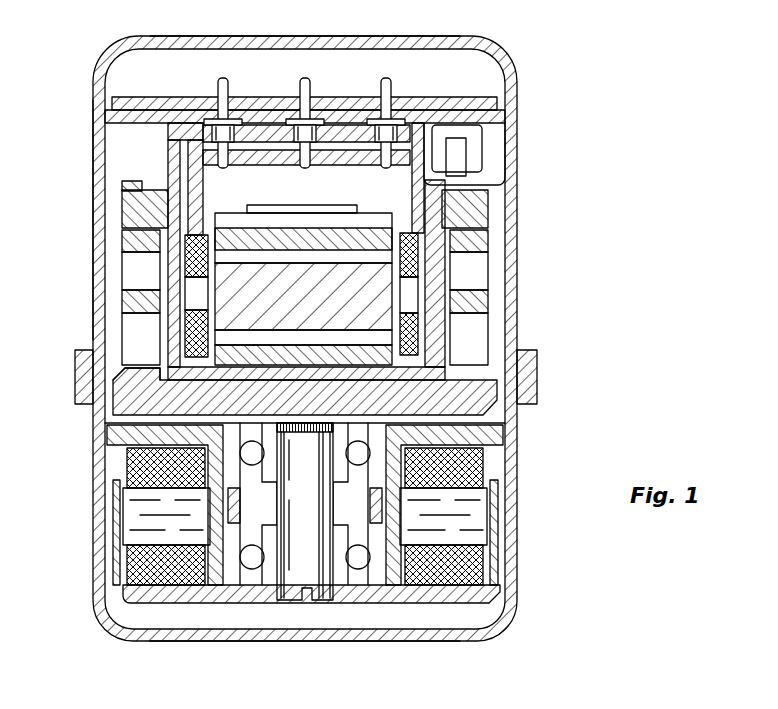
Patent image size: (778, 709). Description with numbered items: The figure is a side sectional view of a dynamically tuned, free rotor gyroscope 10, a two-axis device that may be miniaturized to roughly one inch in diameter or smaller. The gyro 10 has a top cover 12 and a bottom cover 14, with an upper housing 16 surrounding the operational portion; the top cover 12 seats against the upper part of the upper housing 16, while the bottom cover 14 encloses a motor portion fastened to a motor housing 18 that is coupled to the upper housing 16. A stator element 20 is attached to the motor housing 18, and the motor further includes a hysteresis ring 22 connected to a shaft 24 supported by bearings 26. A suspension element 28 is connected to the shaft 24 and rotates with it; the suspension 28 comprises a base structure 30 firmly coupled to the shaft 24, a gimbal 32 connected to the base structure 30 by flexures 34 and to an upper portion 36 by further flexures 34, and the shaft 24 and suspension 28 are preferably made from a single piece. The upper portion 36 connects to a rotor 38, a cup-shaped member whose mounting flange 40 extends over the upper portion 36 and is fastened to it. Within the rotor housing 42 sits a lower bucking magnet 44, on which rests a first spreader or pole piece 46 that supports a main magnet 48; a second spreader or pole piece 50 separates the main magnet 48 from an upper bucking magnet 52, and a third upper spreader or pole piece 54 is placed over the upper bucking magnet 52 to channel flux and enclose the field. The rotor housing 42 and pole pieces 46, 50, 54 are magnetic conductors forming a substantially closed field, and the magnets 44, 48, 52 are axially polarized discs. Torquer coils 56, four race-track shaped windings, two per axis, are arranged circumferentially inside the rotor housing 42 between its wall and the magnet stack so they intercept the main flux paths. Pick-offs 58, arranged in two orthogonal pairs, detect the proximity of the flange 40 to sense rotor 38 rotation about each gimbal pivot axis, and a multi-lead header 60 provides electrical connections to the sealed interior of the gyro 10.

The gyroscope 10 is at (519, 50).
The top cover 12 is at (252, 12).
The bottom cover 14 is at (440, 642).
The upper housing 16 is at (93, 193).
The motor housing 18 is at (503, 443).
The stator element 20 is at (138, 510).
The hysteresis ring 22 is at (495, 557).
The shaft 24 is at (290, 598).
The bearings 26 is at (245, 560).
The suspension element 28 is at (536, 360).
The base structure 30 is at (505, 365).
The gimbal 32 is at (487, 252).
The flexures 34 is at (140, 270).
The upper portion 36 is at (500, 203).
The rotor 38 is at (120, 174).
The mounting flange 40 is at (168, 153).
The rotor housing 42 is at (468, 372).
The lower bucking magnet 44 is at (170, 418).
The first spreader or pole piece 46 is at (312, 400).
The main magnet 48 is at (230, 290).
The second spreader or pole piece 50 is at (322, 250).
The upper bucking magnet 52 is at (280, 238).
The third upper spreader or pole piece 54 is at (245, 182).
The torquer coils 56 is at (420, 270).
The pick-offs 58 is at (474, 150).
The multi-lead header 60 is at (346, 127).